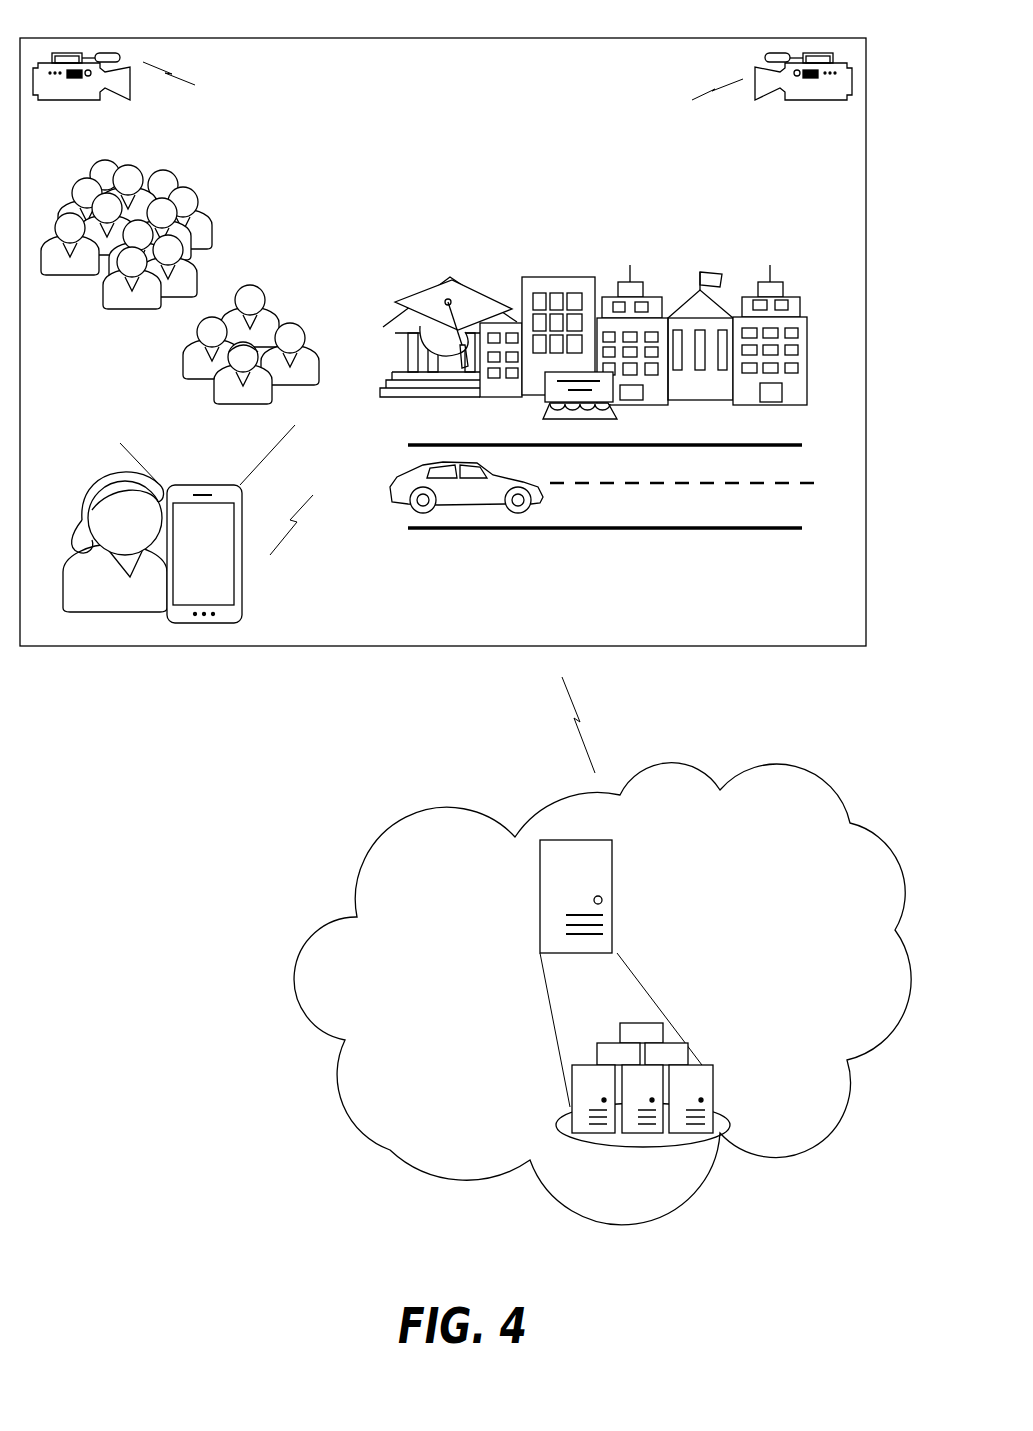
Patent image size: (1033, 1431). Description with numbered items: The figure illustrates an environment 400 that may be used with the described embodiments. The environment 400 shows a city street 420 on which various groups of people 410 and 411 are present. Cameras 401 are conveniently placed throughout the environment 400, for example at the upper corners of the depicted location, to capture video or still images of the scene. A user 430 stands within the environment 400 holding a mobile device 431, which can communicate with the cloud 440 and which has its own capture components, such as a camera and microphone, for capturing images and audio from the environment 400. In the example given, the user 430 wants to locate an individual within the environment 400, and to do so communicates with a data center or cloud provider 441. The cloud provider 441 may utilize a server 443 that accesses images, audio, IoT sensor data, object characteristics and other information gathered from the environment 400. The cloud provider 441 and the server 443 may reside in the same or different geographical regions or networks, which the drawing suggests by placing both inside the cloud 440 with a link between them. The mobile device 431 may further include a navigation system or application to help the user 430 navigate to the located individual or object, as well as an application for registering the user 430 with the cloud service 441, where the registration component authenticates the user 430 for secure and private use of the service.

The environment 400 is at (522, 23).
The cameras 401 is at (75, 53).
The group of people 410 is at (180, 173).
The group of people 411 is at (255, 288).
The city street 420 is at (552, 272).
The user 430 is at (102, 472).
The mobile device 431 is at (232, 570).
The cloud 440 is at (413, 817).
The server 443 is at (612, 872).
The cloud provider 441 is at (712, 1095).